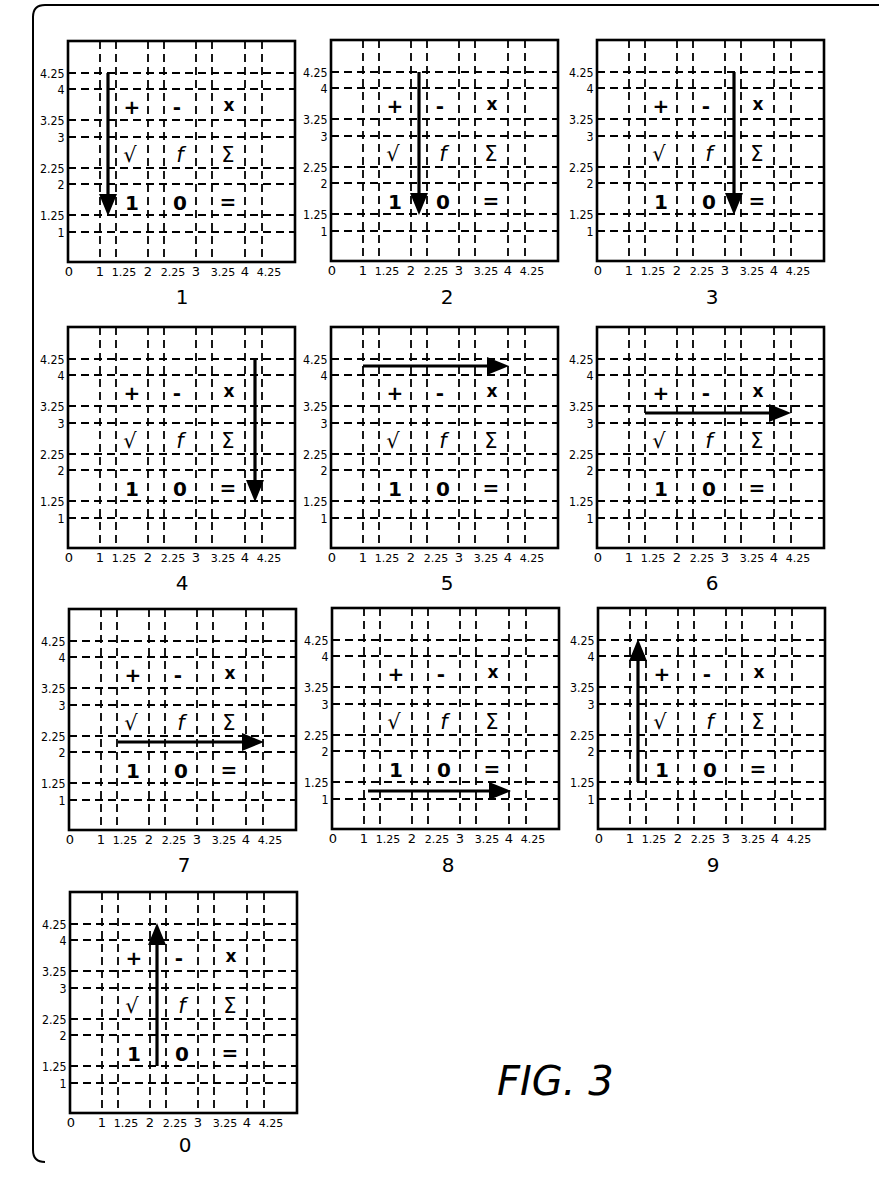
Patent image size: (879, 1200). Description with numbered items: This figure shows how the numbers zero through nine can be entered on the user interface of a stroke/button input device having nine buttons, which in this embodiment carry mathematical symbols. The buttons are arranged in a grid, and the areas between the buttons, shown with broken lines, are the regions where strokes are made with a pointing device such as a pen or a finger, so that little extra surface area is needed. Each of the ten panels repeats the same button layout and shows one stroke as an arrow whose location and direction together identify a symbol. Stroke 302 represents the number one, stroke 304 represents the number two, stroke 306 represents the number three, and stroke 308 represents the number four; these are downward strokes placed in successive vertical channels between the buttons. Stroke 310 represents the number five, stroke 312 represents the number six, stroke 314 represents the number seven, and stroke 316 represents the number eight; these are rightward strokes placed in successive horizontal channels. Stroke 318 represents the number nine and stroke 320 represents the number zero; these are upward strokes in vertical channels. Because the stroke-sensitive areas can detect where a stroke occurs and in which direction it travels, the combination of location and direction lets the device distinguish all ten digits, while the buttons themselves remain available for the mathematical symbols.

The stroke 302 is at (110, 77).
The stroke 304 is at (421, 77).
The stroke 306 is at (732, 77).
The stroke 308 is at (257, 386).
The stroke 310 is at (400, 366).
The stroke 312 is at (684, 413).
The stroke 314 is at (203, 742).
The stroke 316 is at (420, 790).
The stroke 318 is at (636, 678).
The stroke 320 is at (168, 967).